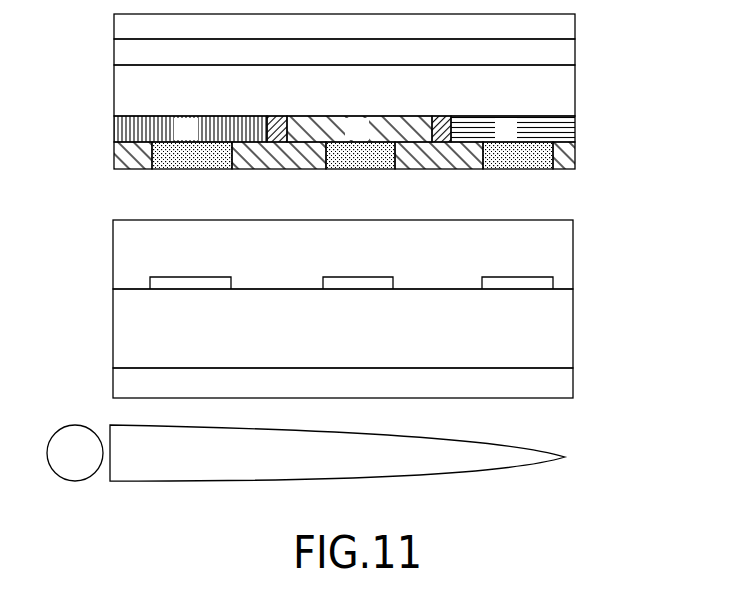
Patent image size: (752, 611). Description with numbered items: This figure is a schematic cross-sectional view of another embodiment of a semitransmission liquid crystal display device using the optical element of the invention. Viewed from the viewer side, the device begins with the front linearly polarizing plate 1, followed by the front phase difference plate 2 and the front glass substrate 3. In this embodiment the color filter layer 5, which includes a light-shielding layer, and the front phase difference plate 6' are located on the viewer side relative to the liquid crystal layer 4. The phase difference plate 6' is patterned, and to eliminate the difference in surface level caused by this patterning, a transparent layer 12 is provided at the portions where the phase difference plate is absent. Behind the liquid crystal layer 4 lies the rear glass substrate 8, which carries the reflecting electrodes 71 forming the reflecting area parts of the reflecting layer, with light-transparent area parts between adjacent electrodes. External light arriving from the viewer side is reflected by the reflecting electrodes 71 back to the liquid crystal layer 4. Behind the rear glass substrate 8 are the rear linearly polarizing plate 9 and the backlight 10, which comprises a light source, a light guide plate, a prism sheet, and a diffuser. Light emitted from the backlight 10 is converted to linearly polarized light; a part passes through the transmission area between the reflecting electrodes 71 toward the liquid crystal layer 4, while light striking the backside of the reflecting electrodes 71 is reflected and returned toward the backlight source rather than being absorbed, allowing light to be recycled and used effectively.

The front linearly polarizing plate 1 is at (575, 32).
The front phase difference plate 2 is at (575, 58).
The front glass substrate 3 is at (575, 95).
The liquid crystal layer 4 is at (573, 250).
The color filter layer 5 is at (575, 127).
The front phase difference plate 6' is at (386, 179).
The rear glass substrate 8 is at (573, 334).
The rear linearly polarizing plate 9 is at (573, 382).
The backlight 10 is at (565, 457).
The transparent layer 12 is at (505, 160).
The reflecting electrode 71 is at (553, 279).